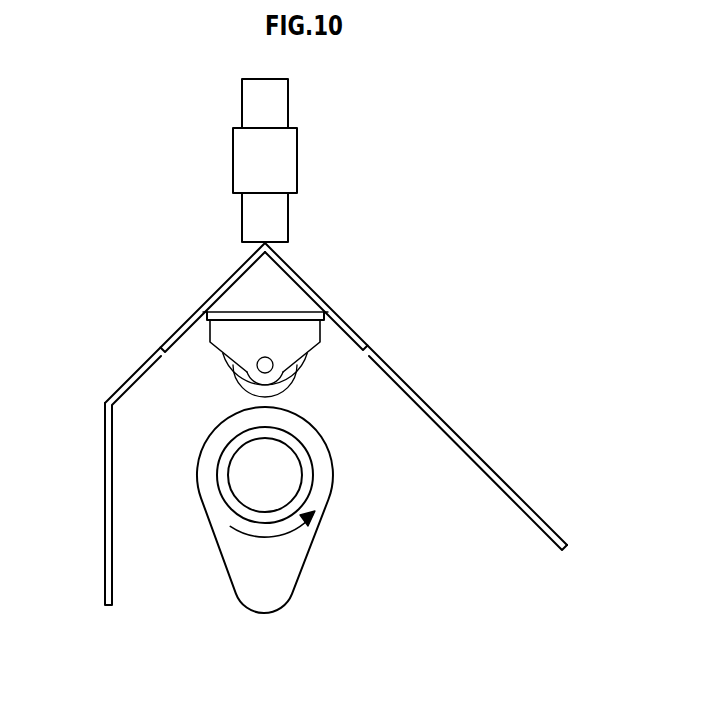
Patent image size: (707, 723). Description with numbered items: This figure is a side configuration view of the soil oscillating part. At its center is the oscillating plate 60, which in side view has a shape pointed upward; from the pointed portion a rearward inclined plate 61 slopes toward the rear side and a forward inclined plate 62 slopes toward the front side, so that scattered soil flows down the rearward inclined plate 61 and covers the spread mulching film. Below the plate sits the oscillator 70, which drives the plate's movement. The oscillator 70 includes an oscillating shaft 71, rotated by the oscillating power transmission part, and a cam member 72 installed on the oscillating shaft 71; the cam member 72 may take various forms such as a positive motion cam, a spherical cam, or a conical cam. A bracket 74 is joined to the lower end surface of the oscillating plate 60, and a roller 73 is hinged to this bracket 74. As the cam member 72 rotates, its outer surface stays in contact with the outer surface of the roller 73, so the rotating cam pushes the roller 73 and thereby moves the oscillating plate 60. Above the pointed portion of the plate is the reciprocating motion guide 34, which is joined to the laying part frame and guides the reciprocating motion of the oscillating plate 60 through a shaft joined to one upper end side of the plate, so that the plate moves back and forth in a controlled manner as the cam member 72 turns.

The reciprocating motion guide 34 is at (247, 157).
The oscillating plate 60 is at (407, 233).
The rearward inclined plate 61 is at (388, 368).
The forward inclined plate 62 is at (142, 362).
The oscillator 70 is at (348, 515).
The oscillating shaft 71 is at (247, 485).
The cam member 72 is at (280, 587).
The roller 73 is at (293, 383).
The bracket 74 is at (235, 340).